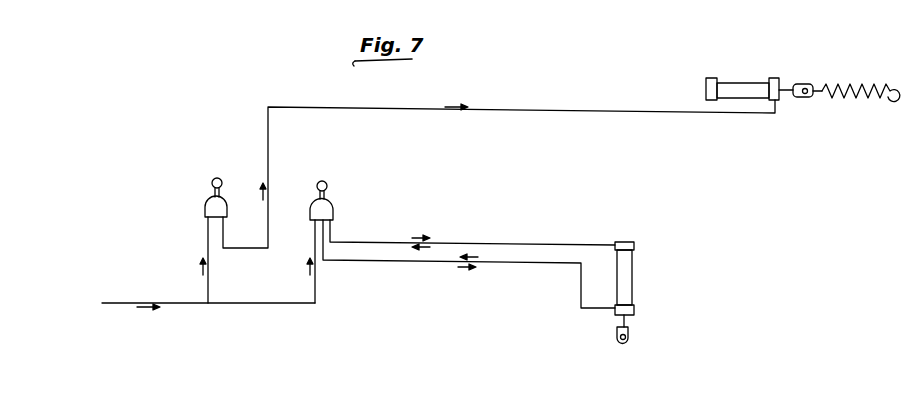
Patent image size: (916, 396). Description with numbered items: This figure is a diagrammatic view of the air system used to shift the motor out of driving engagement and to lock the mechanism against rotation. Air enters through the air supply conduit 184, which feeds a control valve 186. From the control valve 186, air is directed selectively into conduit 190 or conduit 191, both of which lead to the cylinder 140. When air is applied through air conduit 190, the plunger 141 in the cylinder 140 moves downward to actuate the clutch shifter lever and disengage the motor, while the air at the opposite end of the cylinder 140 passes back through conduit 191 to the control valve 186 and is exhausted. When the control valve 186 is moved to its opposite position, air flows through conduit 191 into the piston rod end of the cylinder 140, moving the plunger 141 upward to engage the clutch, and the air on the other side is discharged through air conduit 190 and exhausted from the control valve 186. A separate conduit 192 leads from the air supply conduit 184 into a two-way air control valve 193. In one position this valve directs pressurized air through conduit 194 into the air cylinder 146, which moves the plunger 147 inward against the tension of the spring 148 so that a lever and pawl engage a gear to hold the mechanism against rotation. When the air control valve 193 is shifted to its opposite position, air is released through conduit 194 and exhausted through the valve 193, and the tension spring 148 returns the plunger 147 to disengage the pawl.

The cylinder 140 is at (626, 288).
The plunger 141 is at (626, 318).
The air cylinder 146 is at (762, 66).
The plunger 147 is at (787, 89).
The spring 148 is at (848, 100).
The air supply conduit 184 is at (225, 303).
The control valve 186 is at (328, 208).
The air conduit 190 is at (462, 242).
The conduit 191 is at (485, 263).
The conduit 192 is at (208, 250).
The two-way air control valve 193 is at (220, 203).
The conduit 194 is at (505, 110).